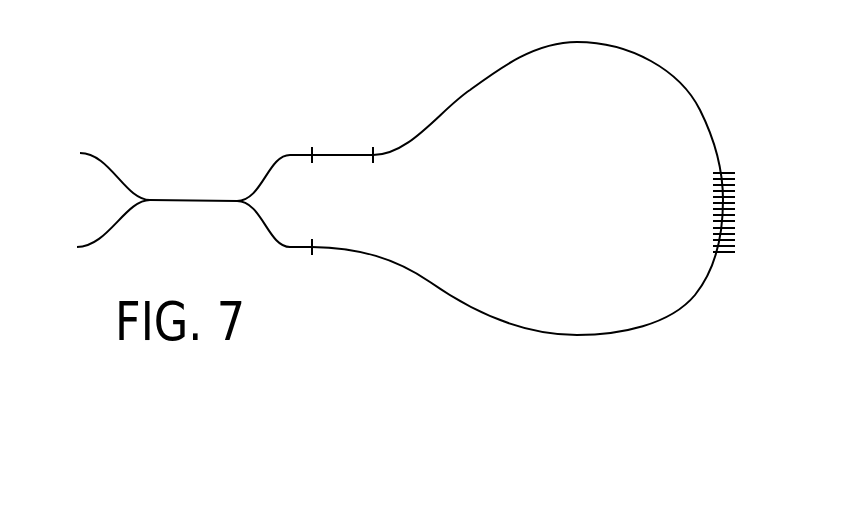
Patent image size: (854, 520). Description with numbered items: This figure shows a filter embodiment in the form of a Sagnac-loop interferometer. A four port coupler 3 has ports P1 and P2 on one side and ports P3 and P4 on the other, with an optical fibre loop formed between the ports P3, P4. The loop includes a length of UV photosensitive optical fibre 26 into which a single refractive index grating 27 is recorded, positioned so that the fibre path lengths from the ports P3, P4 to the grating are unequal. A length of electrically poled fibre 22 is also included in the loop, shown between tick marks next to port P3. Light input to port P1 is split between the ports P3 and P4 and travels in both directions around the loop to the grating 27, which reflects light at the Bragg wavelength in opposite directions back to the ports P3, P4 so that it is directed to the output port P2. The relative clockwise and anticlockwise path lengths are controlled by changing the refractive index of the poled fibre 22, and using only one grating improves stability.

The four port coupler 3 is at (193, 197).
The electrically poled fibre 22 is at (347, 158).
The UV photosensitive optical fibre 26 is at (678, 80).
The refractive index grating 27 is at (710, 205).
The input port P1 is at (102, 158).
The output port P2 is at (98, 243).
The loop port P3 is at (274, 158).
The loop port P4 is at (274, 244).